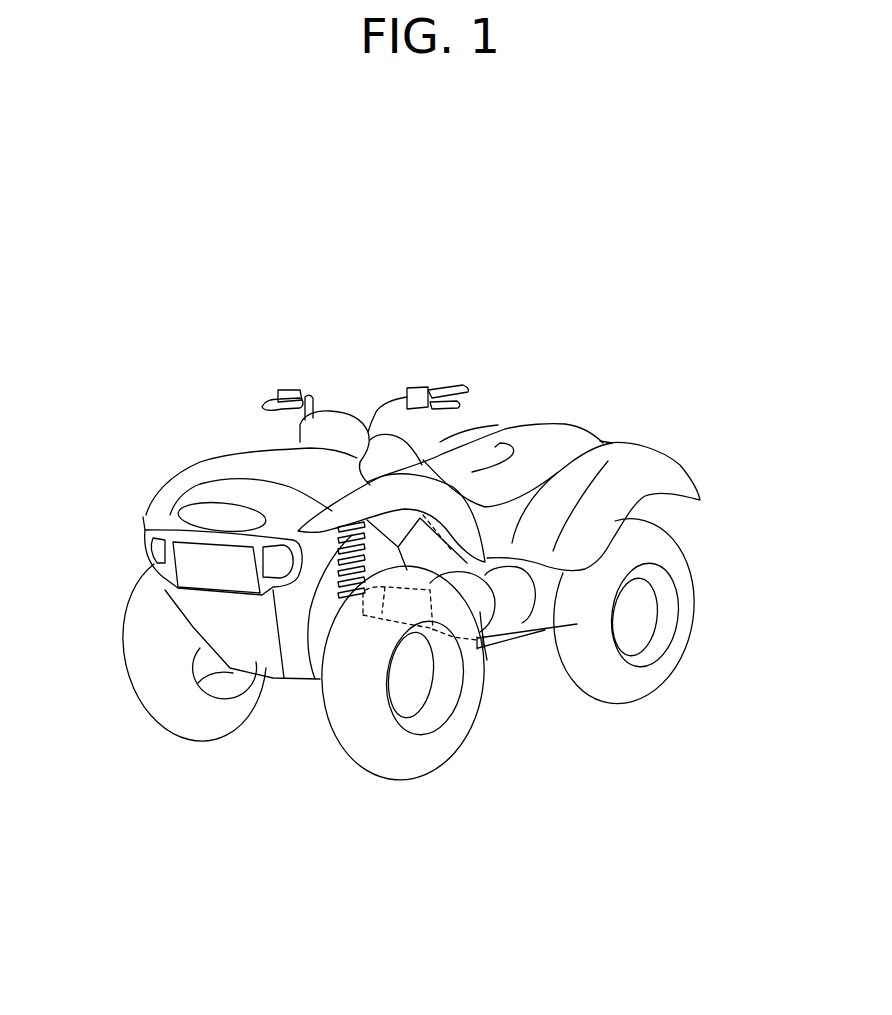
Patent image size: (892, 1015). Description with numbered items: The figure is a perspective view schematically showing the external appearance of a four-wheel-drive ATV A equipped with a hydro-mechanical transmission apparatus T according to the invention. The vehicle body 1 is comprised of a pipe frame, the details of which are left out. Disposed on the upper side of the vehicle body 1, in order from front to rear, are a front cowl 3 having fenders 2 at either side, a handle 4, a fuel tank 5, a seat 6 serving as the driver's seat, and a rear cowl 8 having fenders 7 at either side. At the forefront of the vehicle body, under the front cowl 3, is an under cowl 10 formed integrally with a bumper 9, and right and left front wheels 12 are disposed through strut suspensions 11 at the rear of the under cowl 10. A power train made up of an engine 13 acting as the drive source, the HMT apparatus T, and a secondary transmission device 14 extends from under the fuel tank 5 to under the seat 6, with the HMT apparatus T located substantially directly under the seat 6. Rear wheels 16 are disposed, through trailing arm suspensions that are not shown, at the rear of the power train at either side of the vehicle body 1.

The ATV A is at (112, 290).
The vehicle body 1 is at (522, 645).
The fender 2 is at (218, 482).
The front cowl 3 is at (240, 457).
The handle 4 is at (307, 395).
The fuel tank 5 is at (392, 462).
The seat 6 is at (476, 442).
The fender 7 is at (508, 432).
The rear cowl 8 is at (607, 444).
The bumper 9 is at (148, 551).
The under cowl 10 is at (225, 623).
The strut suspension 11 is at (302, 680).
The front wheel 12 is at (187, 737).
The engine 13 is at (487, 660).
The secondary transmission device 14 is at (520, 610).
The rear wheel 16 is at (693, 580).
The HMT apparatus T is at (382, 615).